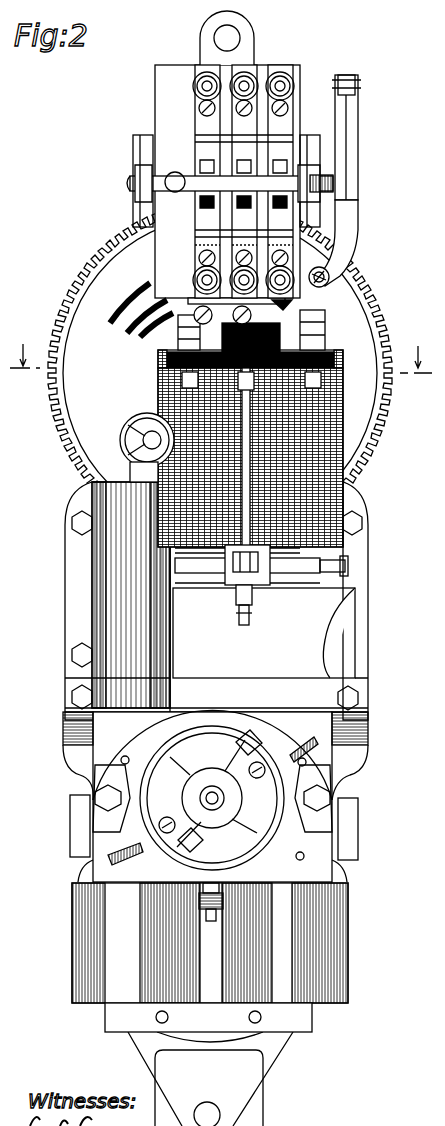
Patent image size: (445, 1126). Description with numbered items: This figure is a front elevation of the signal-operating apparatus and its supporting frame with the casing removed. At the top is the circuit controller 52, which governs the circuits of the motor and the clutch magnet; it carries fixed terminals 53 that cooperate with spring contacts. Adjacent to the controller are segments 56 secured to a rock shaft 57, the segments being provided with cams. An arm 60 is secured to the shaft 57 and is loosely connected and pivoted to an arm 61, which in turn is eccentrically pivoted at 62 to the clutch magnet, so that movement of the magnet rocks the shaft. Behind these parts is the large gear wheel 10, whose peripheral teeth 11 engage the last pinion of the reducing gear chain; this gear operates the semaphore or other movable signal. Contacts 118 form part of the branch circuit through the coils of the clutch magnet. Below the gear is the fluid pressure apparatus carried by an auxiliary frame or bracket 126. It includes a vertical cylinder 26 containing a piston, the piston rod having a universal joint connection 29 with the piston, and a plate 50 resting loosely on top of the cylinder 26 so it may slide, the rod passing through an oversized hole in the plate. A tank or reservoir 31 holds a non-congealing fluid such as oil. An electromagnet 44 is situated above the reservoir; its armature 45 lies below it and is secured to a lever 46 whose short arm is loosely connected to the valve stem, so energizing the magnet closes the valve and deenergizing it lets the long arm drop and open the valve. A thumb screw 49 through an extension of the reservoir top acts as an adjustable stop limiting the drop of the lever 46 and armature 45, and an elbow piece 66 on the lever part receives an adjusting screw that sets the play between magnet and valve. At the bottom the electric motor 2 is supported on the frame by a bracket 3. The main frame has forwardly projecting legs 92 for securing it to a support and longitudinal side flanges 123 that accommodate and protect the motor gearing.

The electric motor 2 is at (215, 871).
The bracket 3 is at (78, 835).
The gear wheel 10 is at (70, 273).
The peripheral teeth 11 is at (93, 252).
The vertical cylinder 26 is at (131, 595).
The universal joint connection 29 is at (138, 476).
The tank or reservoir 31 is at (140, 432).
The electromagnet 44 is at (350, 422).
The armature 45 is at (261, 562).
The lever 46 is at (262, 578).
The thumb screw 49 is at (245, 624).
The plate 50 is at (80, 483).
The circuit controller 52 is at (212, 194).
The fixed terminals 53 is at (205, 122).
The segments 56 is at (195, 152).
The rock shaft 57 is at (160, 185).
The arm 60 is at (342, 138).
The arm 61 is at (345, 220).
The eccentric pivot 62 is at (326, 283).
The elbow piece 66 is at (236, 560).
The projecting legs 92 is at (200, 47).
The brake strips 118 is at (133, 320).
The side flanges 123 is at (417, 889).
The auxiliary frame or bracket 126 is at (72, 603).